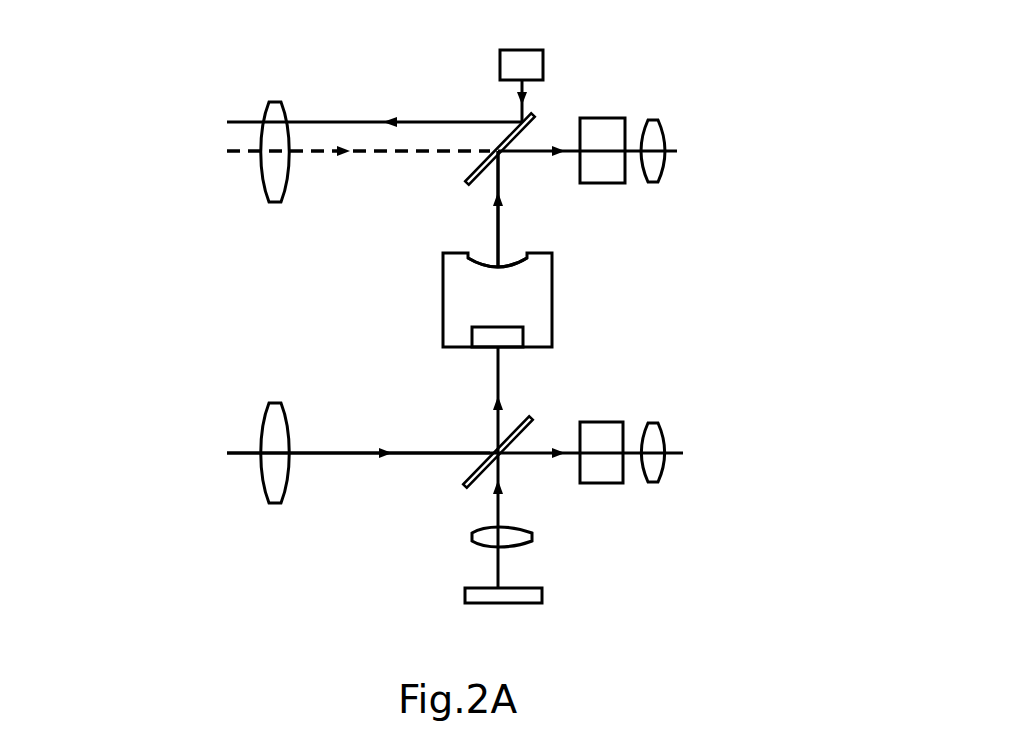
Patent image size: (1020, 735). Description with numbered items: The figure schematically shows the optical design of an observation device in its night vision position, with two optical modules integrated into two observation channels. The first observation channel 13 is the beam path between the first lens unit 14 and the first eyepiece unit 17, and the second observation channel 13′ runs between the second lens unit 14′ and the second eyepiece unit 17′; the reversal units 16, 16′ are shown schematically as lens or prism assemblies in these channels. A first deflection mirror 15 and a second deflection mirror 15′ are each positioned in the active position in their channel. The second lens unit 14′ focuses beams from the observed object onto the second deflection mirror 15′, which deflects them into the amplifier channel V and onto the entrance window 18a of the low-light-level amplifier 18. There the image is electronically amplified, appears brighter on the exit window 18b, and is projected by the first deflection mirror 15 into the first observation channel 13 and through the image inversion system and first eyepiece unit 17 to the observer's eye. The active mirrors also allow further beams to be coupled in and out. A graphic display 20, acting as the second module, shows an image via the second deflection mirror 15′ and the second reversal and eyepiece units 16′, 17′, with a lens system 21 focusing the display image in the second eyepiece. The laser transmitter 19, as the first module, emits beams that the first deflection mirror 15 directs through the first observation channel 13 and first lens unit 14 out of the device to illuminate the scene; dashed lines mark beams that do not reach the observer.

The laser transmitter 19 is at (500, 66).
The first deflection mirror 15 is at (468, 177).
The first lens unit 14 is at (260, 173).
The first observation channel 13 is at (360, 182).
The first reversal unit 16 is at (618, 91).
The first eyepiece unit 17 is at (663, 132).
The amplifier channel V is at (500, 187).
The low-light-level amplifier 18 is at (589, 312).
The exit window 18b is at (508, 262).
The entrance window 18a is at (508, 343).
The second deflection mirror 15′ is at (468, 480).
The second lens unit 14′ is at (263, 485).
The second observation channel 13′ is at (378, 480).
The second reversal unit 16′ is at (619, 506).
The second eyepiece unit 17′ is at (668, 468).
The lens system 21 is at (477, 543).
The graphic display 20 is at (530, 598).